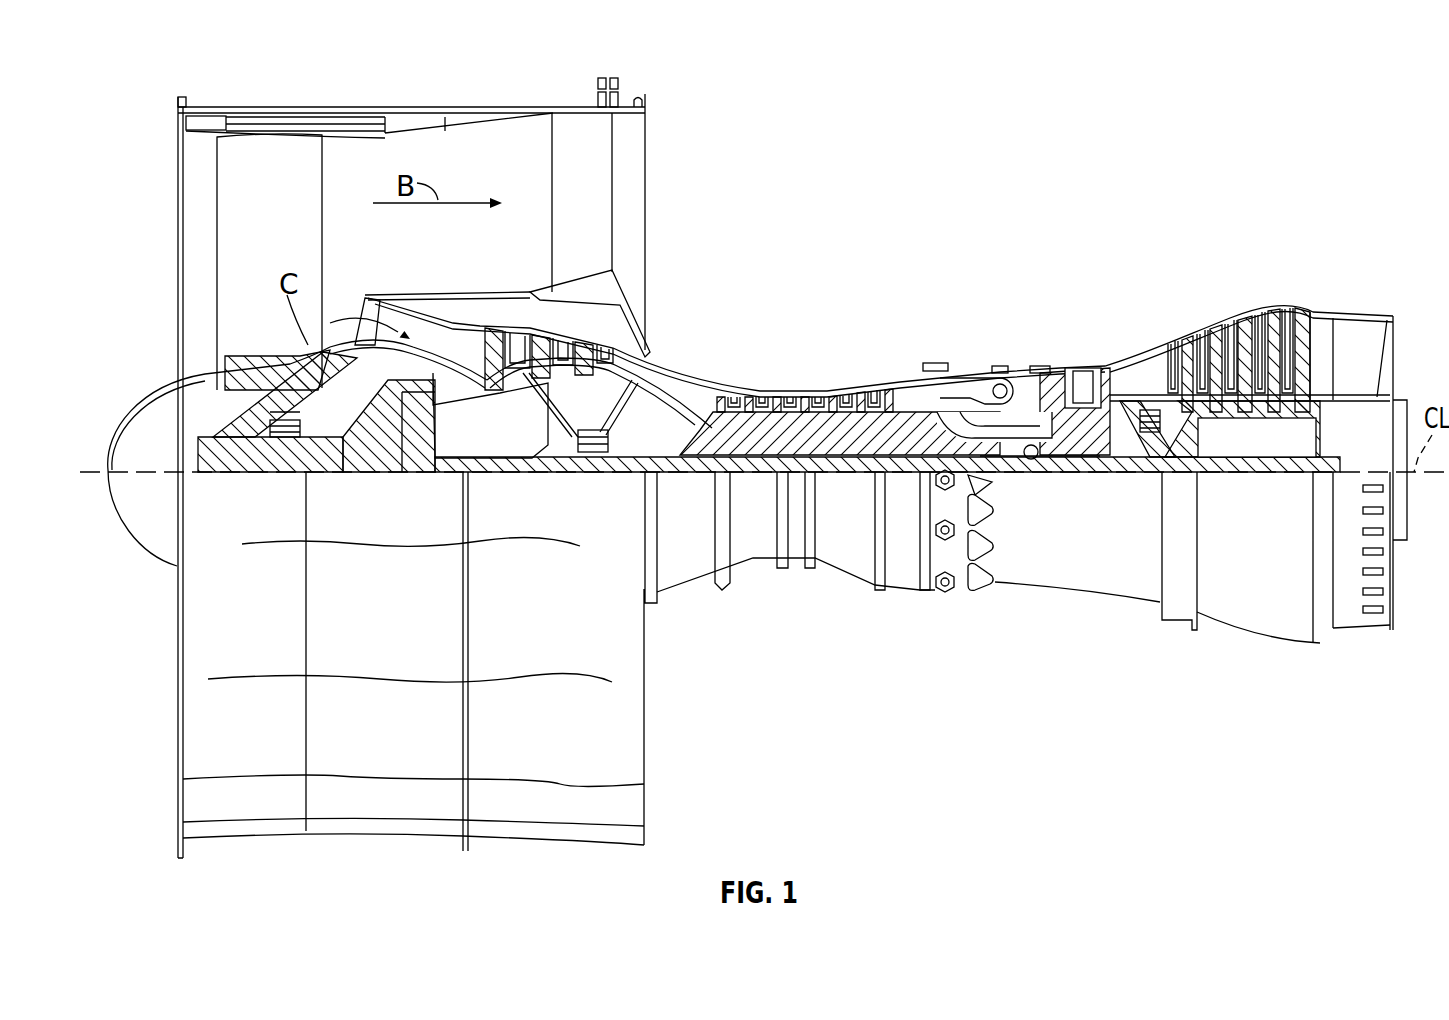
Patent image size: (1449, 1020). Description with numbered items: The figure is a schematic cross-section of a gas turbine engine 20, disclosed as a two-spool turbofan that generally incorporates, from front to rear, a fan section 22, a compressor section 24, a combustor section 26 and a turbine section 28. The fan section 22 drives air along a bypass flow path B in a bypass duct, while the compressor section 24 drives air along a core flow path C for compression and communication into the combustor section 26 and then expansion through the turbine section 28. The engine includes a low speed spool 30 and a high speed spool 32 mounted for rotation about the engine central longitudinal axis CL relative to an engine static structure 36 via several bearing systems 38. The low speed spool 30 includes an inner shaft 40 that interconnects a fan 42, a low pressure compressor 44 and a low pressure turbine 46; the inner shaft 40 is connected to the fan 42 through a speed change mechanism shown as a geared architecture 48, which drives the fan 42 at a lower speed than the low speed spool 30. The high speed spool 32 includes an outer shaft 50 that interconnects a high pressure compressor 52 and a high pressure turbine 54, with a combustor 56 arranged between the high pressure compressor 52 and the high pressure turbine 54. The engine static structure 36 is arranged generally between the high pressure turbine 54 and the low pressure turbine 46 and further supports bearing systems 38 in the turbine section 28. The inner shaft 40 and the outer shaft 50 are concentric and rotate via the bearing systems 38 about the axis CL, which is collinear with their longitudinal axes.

The gas turbine engine 20 is at (1280, 72).
The fan section 22 is at (598, 80).
The compressor section 24 is at (834, 288).
The combustor section 26 is at (1000, 295).
The turbine section 28 is at (1141, 273).
The low speed spool 30 is at (858, 482).
The high speed spool 32 is at (920, 420).
The engine static structure 36 is at (908, 590).
The bearing systems 38 is at (283, 440).
The inner shaft 40 is at (668, 474).
The fan 42 is at (284, 240).
The low pressure compressor 44 is at (557, 340).
The low pressure turbine 46 is at (1247, 335).
The geared architecture 48 is at (415, 440).
The outer shaft 50 is at (1040, 462).
The high pressure compressor 52 is at (823, 430).
The high pressure turbine 54 is at (1088, 366).
The combustor 56 is at (1002, 396).